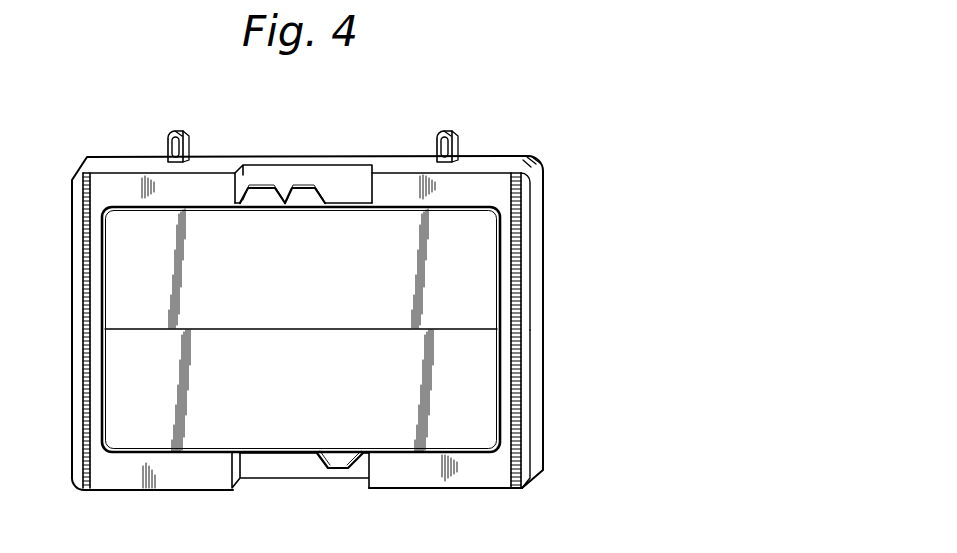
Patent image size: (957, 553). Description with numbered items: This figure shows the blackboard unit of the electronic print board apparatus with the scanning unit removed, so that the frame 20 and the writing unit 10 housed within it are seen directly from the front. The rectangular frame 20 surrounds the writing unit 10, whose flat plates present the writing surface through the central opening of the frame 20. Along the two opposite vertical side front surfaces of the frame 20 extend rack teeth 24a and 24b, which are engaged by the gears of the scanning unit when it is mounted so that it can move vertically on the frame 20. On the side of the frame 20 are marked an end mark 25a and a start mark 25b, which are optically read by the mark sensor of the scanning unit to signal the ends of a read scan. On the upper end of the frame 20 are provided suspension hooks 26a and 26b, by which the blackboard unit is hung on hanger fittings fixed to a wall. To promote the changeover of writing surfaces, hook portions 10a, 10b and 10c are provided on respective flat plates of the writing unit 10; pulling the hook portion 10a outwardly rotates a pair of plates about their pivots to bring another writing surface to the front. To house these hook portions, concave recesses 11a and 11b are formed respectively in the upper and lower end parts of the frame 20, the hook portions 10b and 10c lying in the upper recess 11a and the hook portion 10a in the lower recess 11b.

The writing unit 10 is at (483, 262).
The hook portion 10a is at (342, 458).
The hook portion 10b is at (304, 194).
The hook portion 10c is at (257, 188).
The concave recess 11a is at (355, 173).
The concave recess 11b is at (257, 468).
The frame 20 is at (522, 343).
The rack teeth 24a is at (78, 250).
The rack teeth 24b is at (518, 185).
The end mark 25a is at (545, 209).
The start mark 25b is at (545, 441).
The suspension hook 26a is at (190, 133).
The suspension hook 26b is at (473, 120).